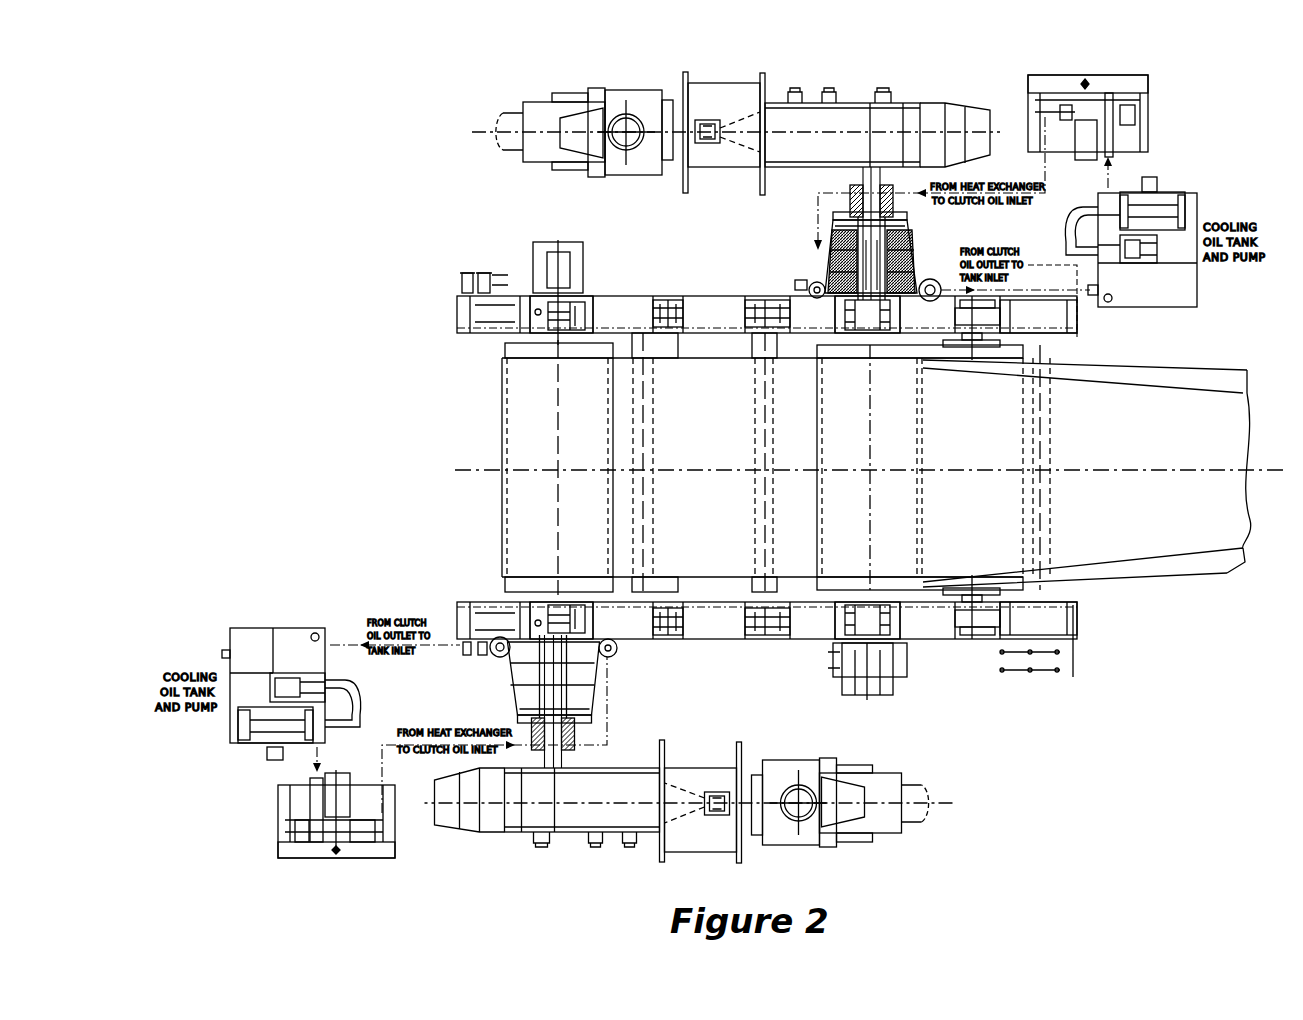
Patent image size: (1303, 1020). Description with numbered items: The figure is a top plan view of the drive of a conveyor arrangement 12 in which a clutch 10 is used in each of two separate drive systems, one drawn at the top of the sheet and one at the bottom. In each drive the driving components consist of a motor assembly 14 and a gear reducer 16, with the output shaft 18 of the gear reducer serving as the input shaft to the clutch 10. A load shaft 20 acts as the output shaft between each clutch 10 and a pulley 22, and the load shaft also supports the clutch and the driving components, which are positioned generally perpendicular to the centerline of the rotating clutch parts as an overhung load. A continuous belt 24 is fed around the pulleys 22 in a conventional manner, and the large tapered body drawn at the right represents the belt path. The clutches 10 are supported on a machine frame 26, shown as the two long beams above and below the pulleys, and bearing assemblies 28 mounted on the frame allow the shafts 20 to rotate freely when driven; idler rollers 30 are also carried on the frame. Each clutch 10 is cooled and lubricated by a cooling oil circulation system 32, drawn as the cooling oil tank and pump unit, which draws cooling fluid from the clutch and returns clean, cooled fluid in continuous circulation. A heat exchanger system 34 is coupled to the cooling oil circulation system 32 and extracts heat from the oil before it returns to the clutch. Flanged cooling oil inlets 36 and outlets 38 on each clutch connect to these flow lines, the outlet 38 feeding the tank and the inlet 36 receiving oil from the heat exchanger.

The clutch 10 is at (823, 237).
The conveyor arrangement 12 is at (410, 404).
The motor assembly 14 is at (540, 163).
The gear reducer 16 is at (832, 118).
The output shaft 18 is at (853, 180).
The load shaft 20 is at (875, 263).
The pulley 22 is at (503, 583).
The continuous belt 24 is at (1097, 552).
The machine frame 26 is at (697, 300).
The bearing assemblies 28 is at (567, 300).
The idler rollers 30 is at (1013, 590).
The cooling oil circulation system 32 is at (1180, 177).
The heat exchanger system 34 is at (1155, 88).
The cooling oil inlet 36 is at (809, 287).
The cooling oil outlet 38 is at (940, 279).